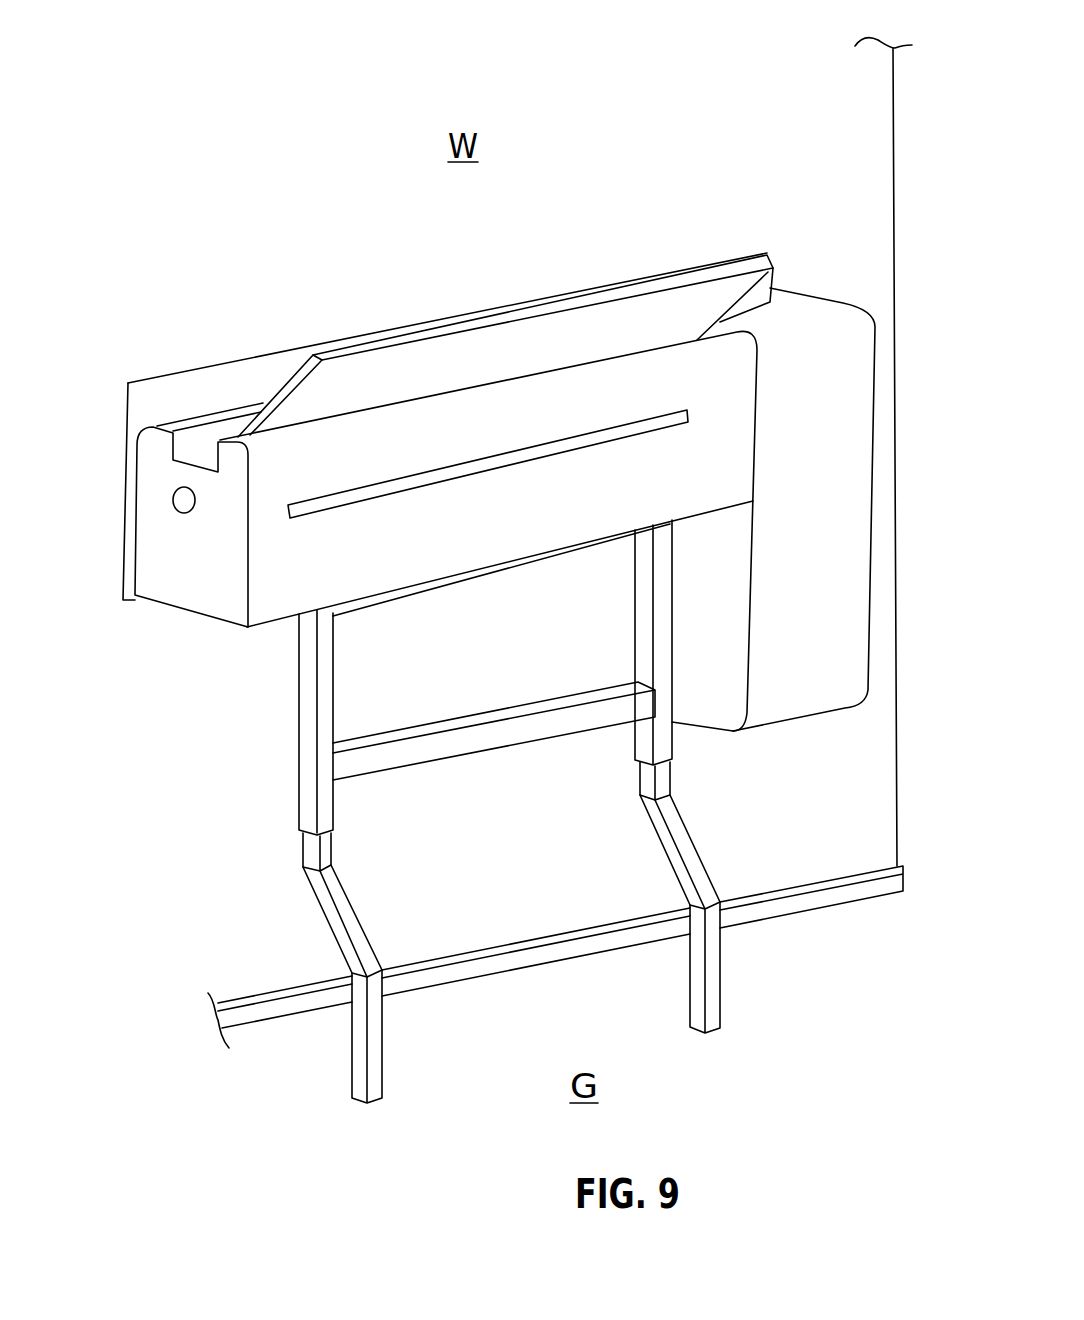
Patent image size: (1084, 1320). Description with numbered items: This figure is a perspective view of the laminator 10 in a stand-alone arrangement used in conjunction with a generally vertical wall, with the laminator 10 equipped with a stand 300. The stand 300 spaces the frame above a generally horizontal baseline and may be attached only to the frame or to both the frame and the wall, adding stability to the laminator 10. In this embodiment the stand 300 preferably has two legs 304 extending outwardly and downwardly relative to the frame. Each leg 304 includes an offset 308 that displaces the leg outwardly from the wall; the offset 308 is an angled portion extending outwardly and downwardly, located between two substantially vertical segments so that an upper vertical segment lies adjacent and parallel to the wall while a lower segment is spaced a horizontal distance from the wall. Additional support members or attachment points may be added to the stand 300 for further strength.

The laminator 10 is at (762, 228).
The stand 300 is at (440, 811).
The leg 304 is at (383, 1038).
The offset 308 is at (358, 920).